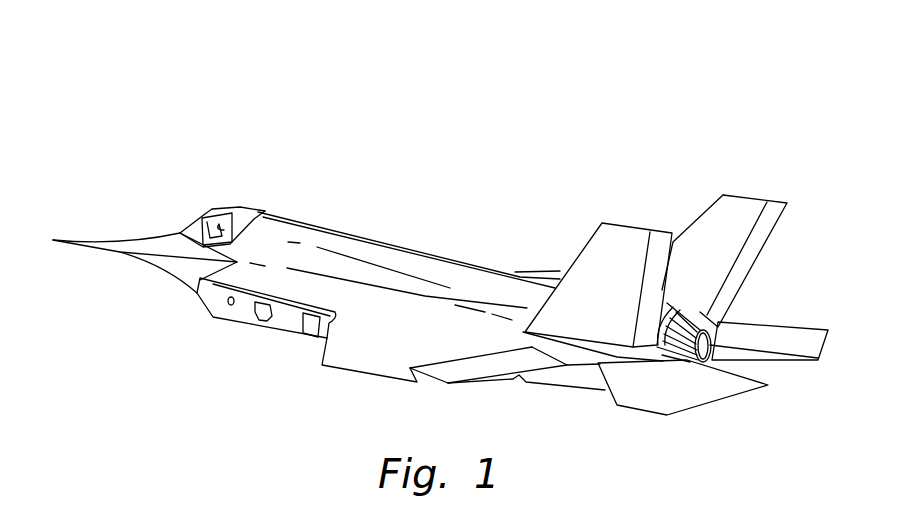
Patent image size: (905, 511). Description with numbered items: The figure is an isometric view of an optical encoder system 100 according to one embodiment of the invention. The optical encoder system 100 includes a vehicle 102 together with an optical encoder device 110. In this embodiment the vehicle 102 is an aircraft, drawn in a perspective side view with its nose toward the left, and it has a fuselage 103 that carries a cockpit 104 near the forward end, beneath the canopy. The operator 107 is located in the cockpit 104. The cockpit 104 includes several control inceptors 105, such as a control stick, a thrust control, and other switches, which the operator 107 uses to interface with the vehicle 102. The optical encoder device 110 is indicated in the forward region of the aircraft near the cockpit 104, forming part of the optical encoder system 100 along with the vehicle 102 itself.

The optical encoder system 100 is at (238, 106).
The vehicle 102 is at (303, 182).
The fuselage 103 is at (312, 224).
The cockpit 104 is at (200, 255).
The control inceptors 105 is at (177, 233).
The operator 107 is at (218, 210).
The optical encoder device 110 is at (180, 232).